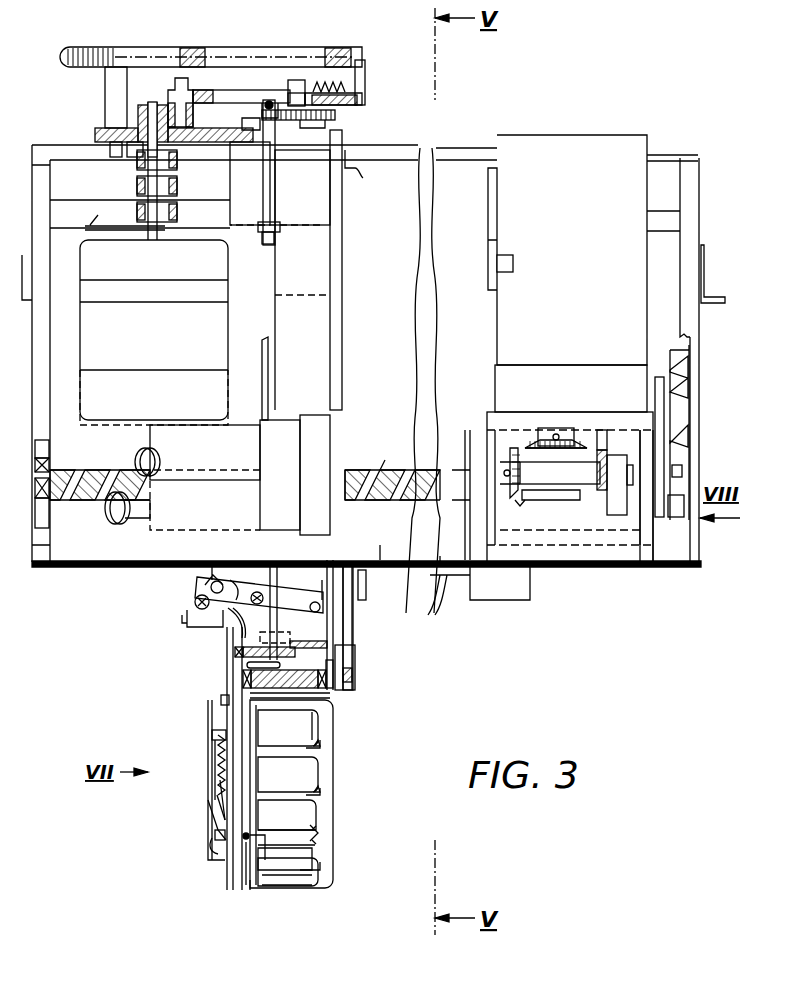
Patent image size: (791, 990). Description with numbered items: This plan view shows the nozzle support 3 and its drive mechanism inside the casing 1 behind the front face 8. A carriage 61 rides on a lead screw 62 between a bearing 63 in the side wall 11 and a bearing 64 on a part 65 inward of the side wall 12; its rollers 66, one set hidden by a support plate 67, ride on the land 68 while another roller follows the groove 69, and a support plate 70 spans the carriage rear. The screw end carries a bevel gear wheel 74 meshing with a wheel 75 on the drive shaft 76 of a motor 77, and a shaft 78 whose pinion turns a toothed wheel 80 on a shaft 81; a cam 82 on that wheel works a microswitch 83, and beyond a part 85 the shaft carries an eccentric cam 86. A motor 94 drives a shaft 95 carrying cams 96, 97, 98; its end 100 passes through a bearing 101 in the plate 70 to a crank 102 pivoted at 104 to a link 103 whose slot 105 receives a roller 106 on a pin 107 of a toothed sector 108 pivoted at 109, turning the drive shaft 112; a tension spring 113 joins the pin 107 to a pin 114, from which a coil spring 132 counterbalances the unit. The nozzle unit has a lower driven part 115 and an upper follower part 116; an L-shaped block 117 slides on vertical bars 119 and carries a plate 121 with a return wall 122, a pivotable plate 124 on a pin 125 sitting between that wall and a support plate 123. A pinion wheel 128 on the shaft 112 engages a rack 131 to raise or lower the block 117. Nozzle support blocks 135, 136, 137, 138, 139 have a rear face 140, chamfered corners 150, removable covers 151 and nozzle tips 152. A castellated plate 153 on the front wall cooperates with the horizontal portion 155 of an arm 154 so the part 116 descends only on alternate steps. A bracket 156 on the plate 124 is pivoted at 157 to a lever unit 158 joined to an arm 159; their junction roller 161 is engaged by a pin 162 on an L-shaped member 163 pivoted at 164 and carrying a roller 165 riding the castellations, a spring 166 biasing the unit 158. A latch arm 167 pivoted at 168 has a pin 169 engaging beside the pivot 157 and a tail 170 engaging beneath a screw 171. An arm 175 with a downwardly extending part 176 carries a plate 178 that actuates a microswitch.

The casing 1 is at (456, 526).
The nozzle support 3 is at (393, 750).
The front face 8 is at (438, 604).
The side wall 11 is at (58, 344).
The side wall 12 is at (696, 314).
The carriage 61 is at (346, 364).
The lead screw 62 is at (356, 466).
The bearing 63 is at (48, 500).
The bearing 64 is at (480, 428).
The part 65 is at (488, 528).
The rollers 66 is at (138, 454).
The support plate 67 is at (328, 430).
The land 68 is at (373, 490).
The groove 69 is at (384, 460).
The support plate 70 is at (250, 142).
The bevel gear wheel 74 is at (515, 450).
The bevel gear wheel 75 is at (530, 441).
The drive shaft 76 is at (553, 424).
The motor 77 is at (588, 298).
The shaft 78 is at (565, 486).
The toothed wheel 80 is at (598, 446).
The shaft 81 is at (577, 500).
The cam 82 is at (624, 510).
The microswitch 83 is at (644, 449).
The part 85 is at (648, 562).
The cam 86 is at (674, 509).
The motor 94 is at (168, 346).
The drive shaft 95 is at (150, 225).
The cam 96 is at (178, 162).
The cam 97 is at (178, 186).
The cam 98 is at (178, 210).
The end of shaft 100 is at (153, 112).
The bearing 101 is at (132, 138).
The crank 102 is at (137, 115).
The link 103 is at (222, 95).
The pivot 104 is at (178, 92).
The slot 105 is at (242, 106).
The roller 106 is at (280, 103).
The pin 107 is at (294, 80).
The toothed sector 108 is at (336, 121).
The pivot 109 is at (273, 132).
The drive shaft 112 is at (270, 374).
The tension spring 113 is at (341, 80).
The pin 114 is at (358, 96).
The lower driven part 115 is at (206, 888).
The upper follower part 116 is at (222, 728).
The L-shaped block 117 is at (334, 688).
The vertical bars 119 is at (240, 682).
The plate 121 is at (242, 845).
The return wall 122 is at (238, 896).
The support plate 123 is at (220, 802).
The plate 124 is at (270, 840).
The pin 125 is at (280, 856).
The pinion wheel 128 is at (325, 648).
The vertical rack 131 is at (235, 655).
The coil spring 132 is at (189, 48).
The nozzle support block 135 is at (300, 890).
The nozzle support block 136 is at (315, 862).
The nozzle support block 137 is at (293, 810).
The nozzle support block 138 is at (289, 774).
The nozzle support block 139 is at (289, 728).
The rear face 140 is at (227, 714).
The chamfer 150 is at (318, 712).
The removable cover 151 is at (322, 775).
The nozzle tip 152 is at (317, 742).
The castellated plate 153 is at (400, 546).
The arm 154 is at (357, 678).
The horizontal portion 155 is at (355, 610).
The bracket 156 is at (246, 880).
The pivot 157 is at (213, 835).
The lever unit 158 is at (210, 797).
The arm 159 is at (215, 626).
The roller 161 is at (187, 627).
The pin 162 is at (190, 604).
The L-shaped member 163 is at (234, 578).
The pivot 164 is at (327, 585).
The roller 165 is at (205, 572).
The spring 166 is at (208, 762).
The arm 167 is at (212, 772).
The pivot 168 is at (220, 702).
The pin 169 is at (212, 842).
The tail 170 is at (290, 640).
The screw 171 is at (204, 590).
The arm 175 is at (335, 386).
The downwardly extending part 176 is at (364, 575).
The plate 178 is at (362, 178).